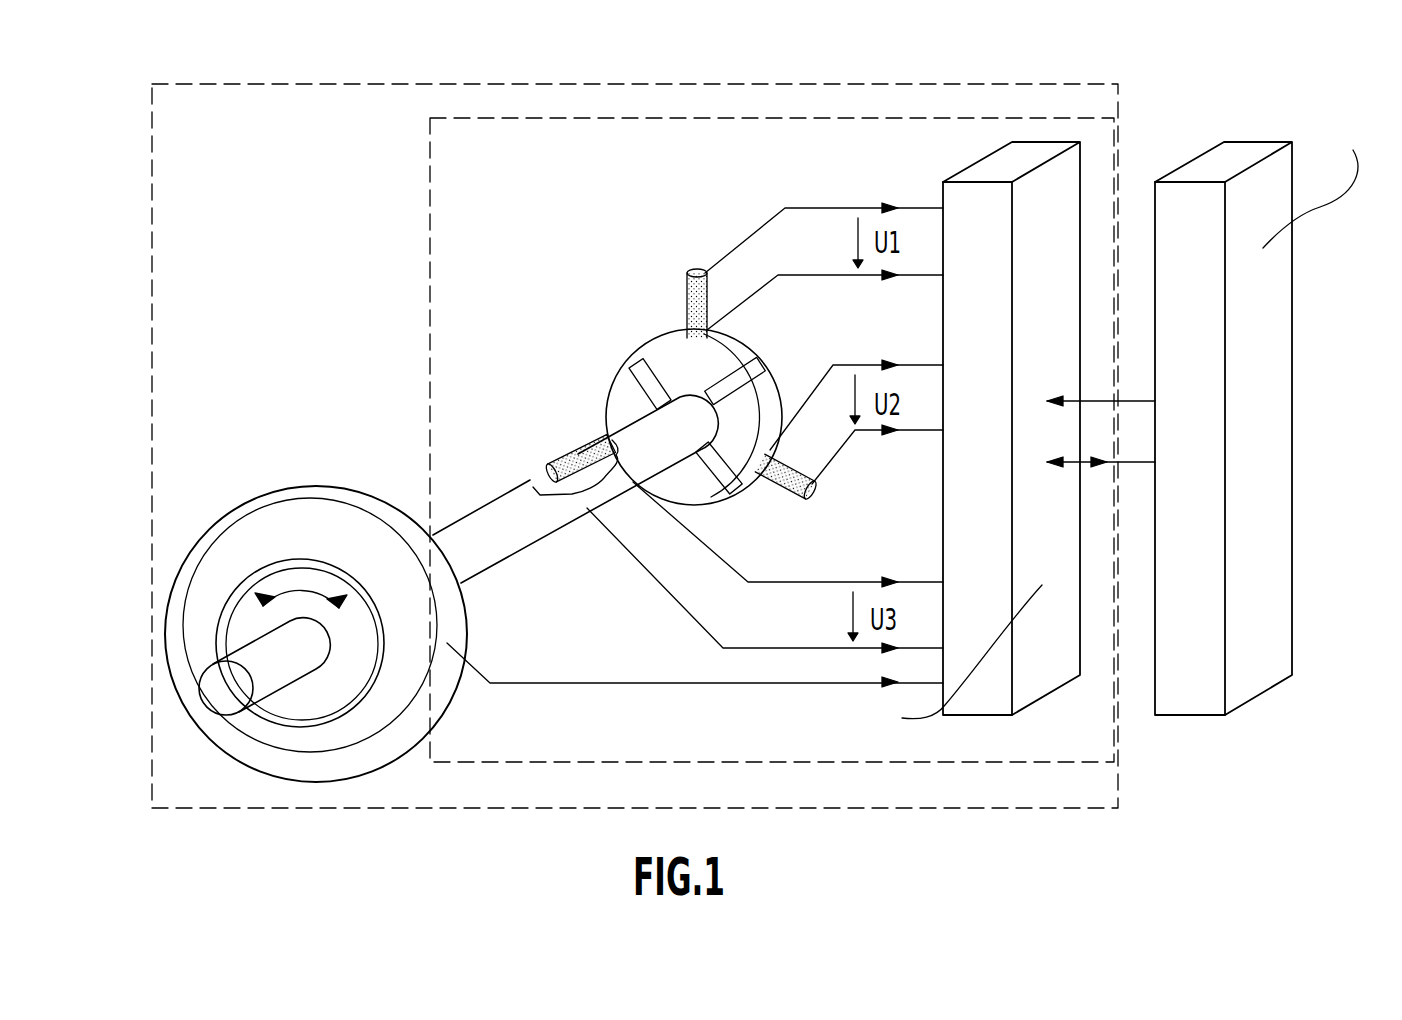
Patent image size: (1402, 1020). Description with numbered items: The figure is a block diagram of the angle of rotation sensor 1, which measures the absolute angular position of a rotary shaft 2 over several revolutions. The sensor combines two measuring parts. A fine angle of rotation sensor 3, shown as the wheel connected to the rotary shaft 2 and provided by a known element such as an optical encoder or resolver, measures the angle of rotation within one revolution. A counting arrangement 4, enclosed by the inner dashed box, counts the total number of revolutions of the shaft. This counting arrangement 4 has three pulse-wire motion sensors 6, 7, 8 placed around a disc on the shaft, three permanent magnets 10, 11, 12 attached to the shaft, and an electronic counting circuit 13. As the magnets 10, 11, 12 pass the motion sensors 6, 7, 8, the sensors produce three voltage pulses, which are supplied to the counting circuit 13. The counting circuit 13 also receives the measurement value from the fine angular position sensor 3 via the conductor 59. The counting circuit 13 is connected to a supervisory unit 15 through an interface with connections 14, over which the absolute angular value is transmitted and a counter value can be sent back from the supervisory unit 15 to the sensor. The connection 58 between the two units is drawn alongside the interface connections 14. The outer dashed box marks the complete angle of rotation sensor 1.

The angle of rotation sensor 1 is at (181, 160).
The rotary shaft 2 is at (228, 699).
The fine angle of rotation sensor 3 is at (351, 503).
The counting arrangement 4 is at (452, 173).
The pulse-wire motion sensor 6 is at (687, 300).
The pulse-wire motion sensor 7 is at (780, 487).
The pulse-wire motion sensor 8 is at (563, 460).
The permanent magnet 10 is at (765, 362).
The permanent magnet 11 is at (712, 462).
The permanent magnet 12 is at (633, 382).
The electronic counting circuit 13 is at (1007, 163).
The interface connections 14 is at (1133, 467).
The supervisory unit 15 is at (1210, 165).
The control line 58 is at (1137, 400).
The conductor 59 is at (650, 682).